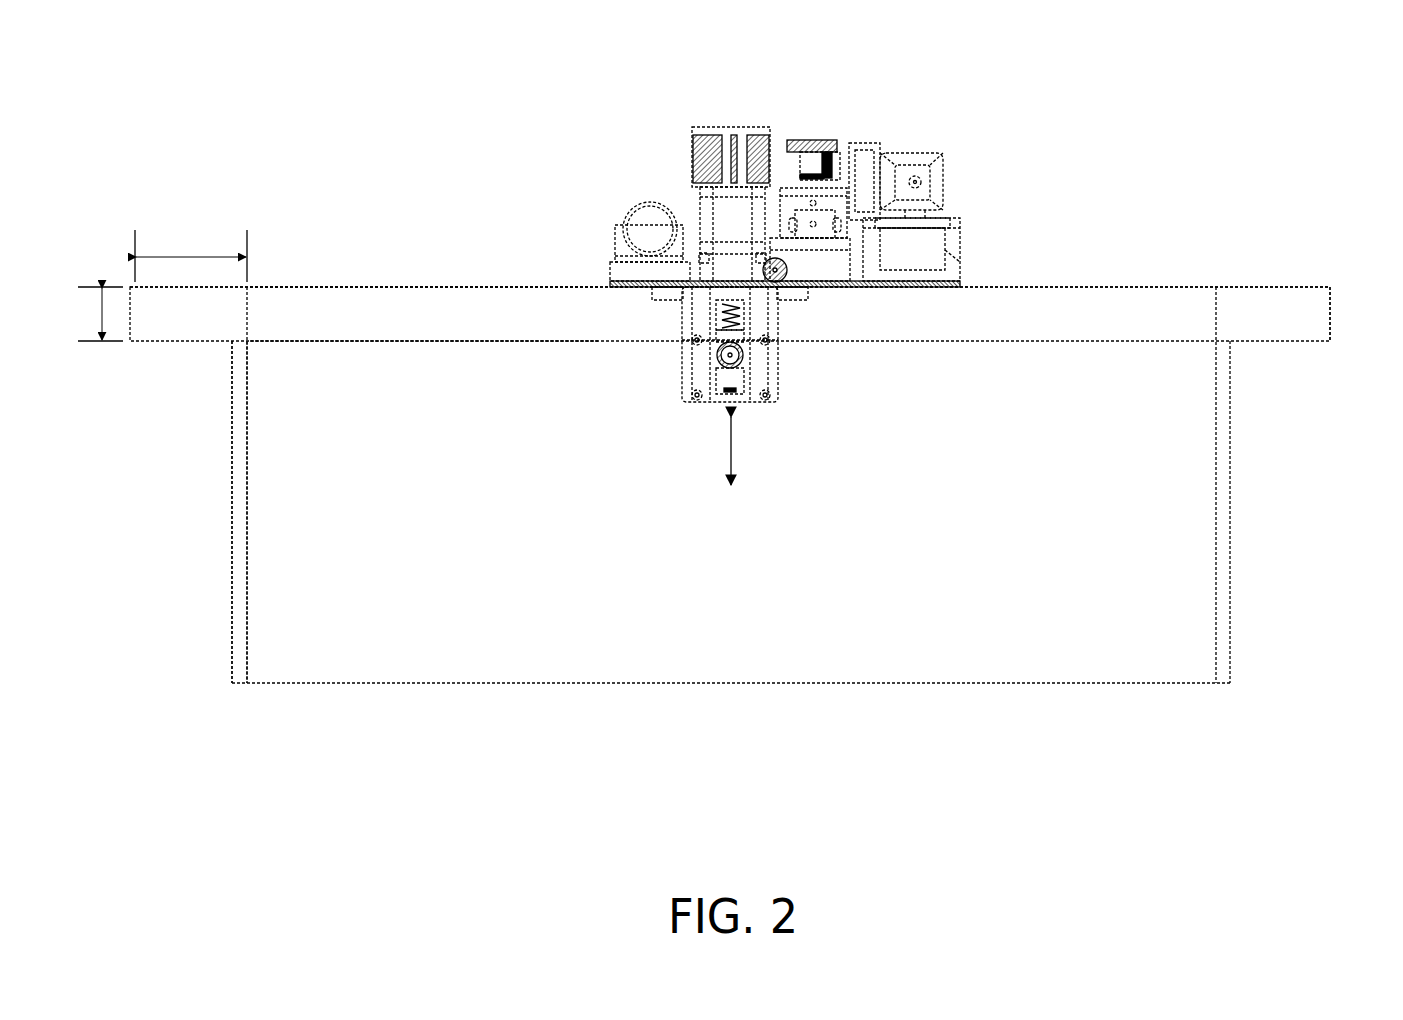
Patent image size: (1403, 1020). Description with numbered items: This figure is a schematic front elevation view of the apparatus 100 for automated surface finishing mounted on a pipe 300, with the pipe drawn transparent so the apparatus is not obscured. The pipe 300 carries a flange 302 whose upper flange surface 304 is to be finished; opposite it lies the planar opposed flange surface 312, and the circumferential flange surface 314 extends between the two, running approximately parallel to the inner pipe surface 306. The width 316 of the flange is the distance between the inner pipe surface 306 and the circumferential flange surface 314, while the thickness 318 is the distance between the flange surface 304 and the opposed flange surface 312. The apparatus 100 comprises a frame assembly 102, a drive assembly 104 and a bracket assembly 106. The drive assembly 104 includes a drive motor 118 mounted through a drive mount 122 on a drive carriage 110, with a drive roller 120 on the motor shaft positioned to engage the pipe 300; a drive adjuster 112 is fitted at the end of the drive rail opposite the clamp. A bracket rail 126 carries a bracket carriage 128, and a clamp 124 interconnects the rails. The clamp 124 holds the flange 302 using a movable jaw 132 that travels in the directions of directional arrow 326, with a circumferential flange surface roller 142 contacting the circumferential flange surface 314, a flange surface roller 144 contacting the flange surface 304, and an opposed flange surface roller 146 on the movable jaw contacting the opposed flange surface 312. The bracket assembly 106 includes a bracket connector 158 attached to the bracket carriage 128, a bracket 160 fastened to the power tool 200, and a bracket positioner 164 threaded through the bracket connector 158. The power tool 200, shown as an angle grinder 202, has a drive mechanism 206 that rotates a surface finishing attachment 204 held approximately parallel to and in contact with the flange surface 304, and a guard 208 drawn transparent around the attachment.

The apparatus 100 is at (743, 249).
The frame assembly 102 is at (602, 268).
The drive assembly 104 is at (682, 176).
The bracket assembly 106 is at (845, 117).
The drive carriage 110 is at (611, 216).
The drive adjuster 112 is at (628, 205).
The drive motor 118 is at (712, 127).
The drive roller 120 is at (752, 300).
The drive mount 122 is at (632, 290).
The clamp 124 is at (726, 344).
The bracket rail 126 is at (830, 243).
The bracket carriage 128 is at (782, 225).
The movable jaw 132 is at (755, 378).
The circumferential flange surface roller 142 is at (660, 302).
The flange surface roller 144 is at (790, 272).
The opposed flange surface roller 146 is at (745, 355).
The bracket connector 158 is at (838, 152).
The bracket 160 is at (873, 145).
The bracket positioner 164 is at (790, 140).
The power tool 200 is at (953, 183).
The angle grinder 202 is at (949, 147).
The surface finishing attachment 204 is at (950, 238).
The drive mechanism 206 is at (942, 182).
The guard 208 is at (960, 226).
The pipe 300 is at (1265, 535).
The flange 302 is at (1317, 285).
The flange surface 304 is at (372, 286).
The inner pipe surface 306 is at (247, 525).
The opposed flange surface 312 is at (390, 343).
The circumferential flange surface 314 is at (1332, 310).
The width 316 is at (177, 243).
The thickness 318 is at (100, 312).
The directional arrow 326 is at (733, 448).